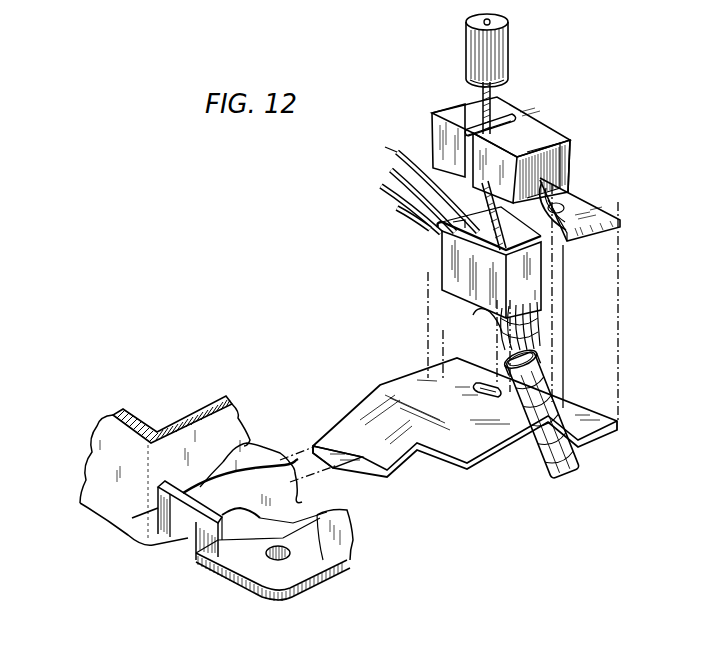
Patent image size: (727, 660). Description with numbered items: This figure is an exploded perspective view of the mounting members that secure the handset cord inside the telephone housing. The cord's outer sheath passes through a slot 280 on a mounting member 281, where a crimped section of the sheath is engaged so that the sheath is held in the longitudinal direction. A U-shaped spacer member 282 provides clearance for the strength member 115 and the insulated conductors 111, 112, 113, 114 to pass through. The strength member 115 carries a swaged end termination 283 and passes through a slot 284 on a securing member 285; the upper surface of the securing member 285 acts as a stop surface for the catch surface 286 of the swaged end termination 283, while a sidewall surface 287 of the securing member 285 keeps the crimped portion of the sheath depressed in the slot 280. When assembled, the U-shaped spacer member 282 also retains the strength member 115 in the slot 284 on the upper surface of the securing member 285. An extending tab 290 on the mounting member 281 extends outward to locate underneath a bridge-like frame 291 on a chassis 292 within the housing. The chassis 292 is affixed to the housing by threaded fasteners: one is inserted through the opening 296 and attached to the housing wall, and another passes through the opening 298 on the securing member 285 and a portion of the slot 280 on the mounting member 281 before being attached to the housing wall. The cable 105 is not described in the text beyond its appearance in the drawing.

The cable 105 is at (548, 448).
The insulated conductor 111 is at (396, 150).
The insulated conductor 112 is at (393, 168).
The insulated conductor 113 is at (384, 187).
The insulated conductor 114 is at (397, 210).
The strength member 115 is at (478, 96).
The slot 280 is at (483, 390).
The mounting member 281 is at (410, 385).
The U-shaped spacer member 282 is at (447, 270).
The swaged end termination 283 is at (508, 44).
The slot 284 is at (468, 136).
The securing member 285 is at (532, 127).
The catch surface 286 is at (510, 83).
The sidewall surface 287 is at (572, 160).
The extending tab 290 is at (308, 458).
The bridge-like frame 291 is at (198, 537).
The chassis 292 is at (88, 467).
The opening 296 is at (291, 554).
The opening 298 is at (573, 199).